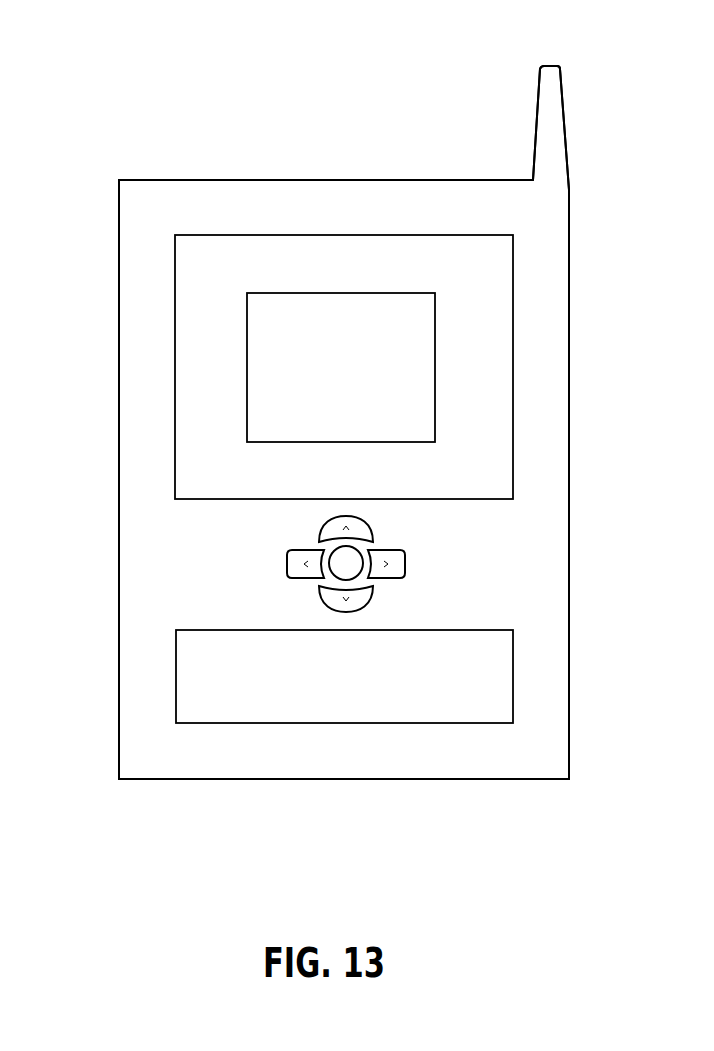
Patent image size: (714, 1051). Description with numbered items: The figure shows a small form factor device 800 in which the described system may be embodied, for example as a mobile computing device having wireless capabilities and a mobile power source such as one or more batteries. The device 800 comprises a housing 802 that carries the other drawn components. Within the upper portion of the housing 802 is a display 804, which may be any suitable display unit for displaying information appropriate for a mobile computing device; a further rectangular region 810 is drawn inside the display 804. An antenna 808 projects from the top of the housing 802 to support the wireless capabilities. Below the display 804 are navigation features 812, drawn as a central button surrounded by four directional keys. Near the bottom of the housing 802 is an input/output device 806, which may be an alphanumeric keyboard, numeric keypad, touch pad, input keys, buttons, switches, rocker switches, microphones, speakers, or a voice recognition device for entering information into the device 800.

The small form factor device 800 is at (137, 85).
The housing 802 is at (570, 481).
The display 804 is at (514, 256).
The input/output (I/O) device 806 is at (514, 668).
The antenna 808 is at (535, 116).
The display window 810 is at (436, 388).
The navigation features 812 is at (415, 556).